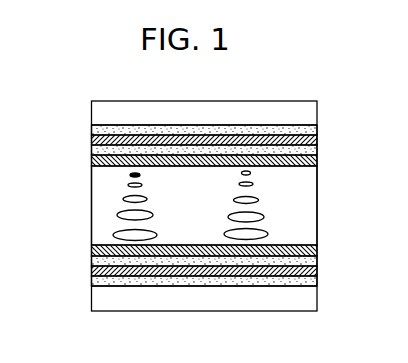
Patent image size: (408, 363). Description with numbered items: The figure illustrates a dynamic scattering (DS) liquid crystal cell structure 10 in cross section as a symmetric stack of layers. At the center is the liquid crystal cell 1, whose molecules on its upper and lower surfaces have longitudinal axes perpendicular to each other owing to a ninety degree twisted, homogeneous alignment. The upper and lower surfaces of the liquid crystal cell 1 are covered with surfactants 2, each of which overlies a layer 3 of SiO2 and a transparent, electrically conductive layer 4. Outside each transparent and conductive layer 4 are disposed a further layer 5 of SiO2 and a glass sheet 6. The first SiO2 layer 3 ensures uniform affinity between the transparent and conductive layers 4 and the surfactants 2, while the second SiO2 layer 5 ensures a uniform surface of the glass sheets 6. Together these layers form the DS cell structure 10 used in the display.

The DS cell structure 10 is at (296, 92).
The liquid crystal cell 1 is at (92, 197).
The surfactant 2 is at (317, 163).
The layer of SiO2 3 is at (92, 148).
The transparent, electrically conductive layer 4 is at (317, 140).
The layer of SiO2 5 is at (92, 135).
The glass sheet 6 is at (314, 117).